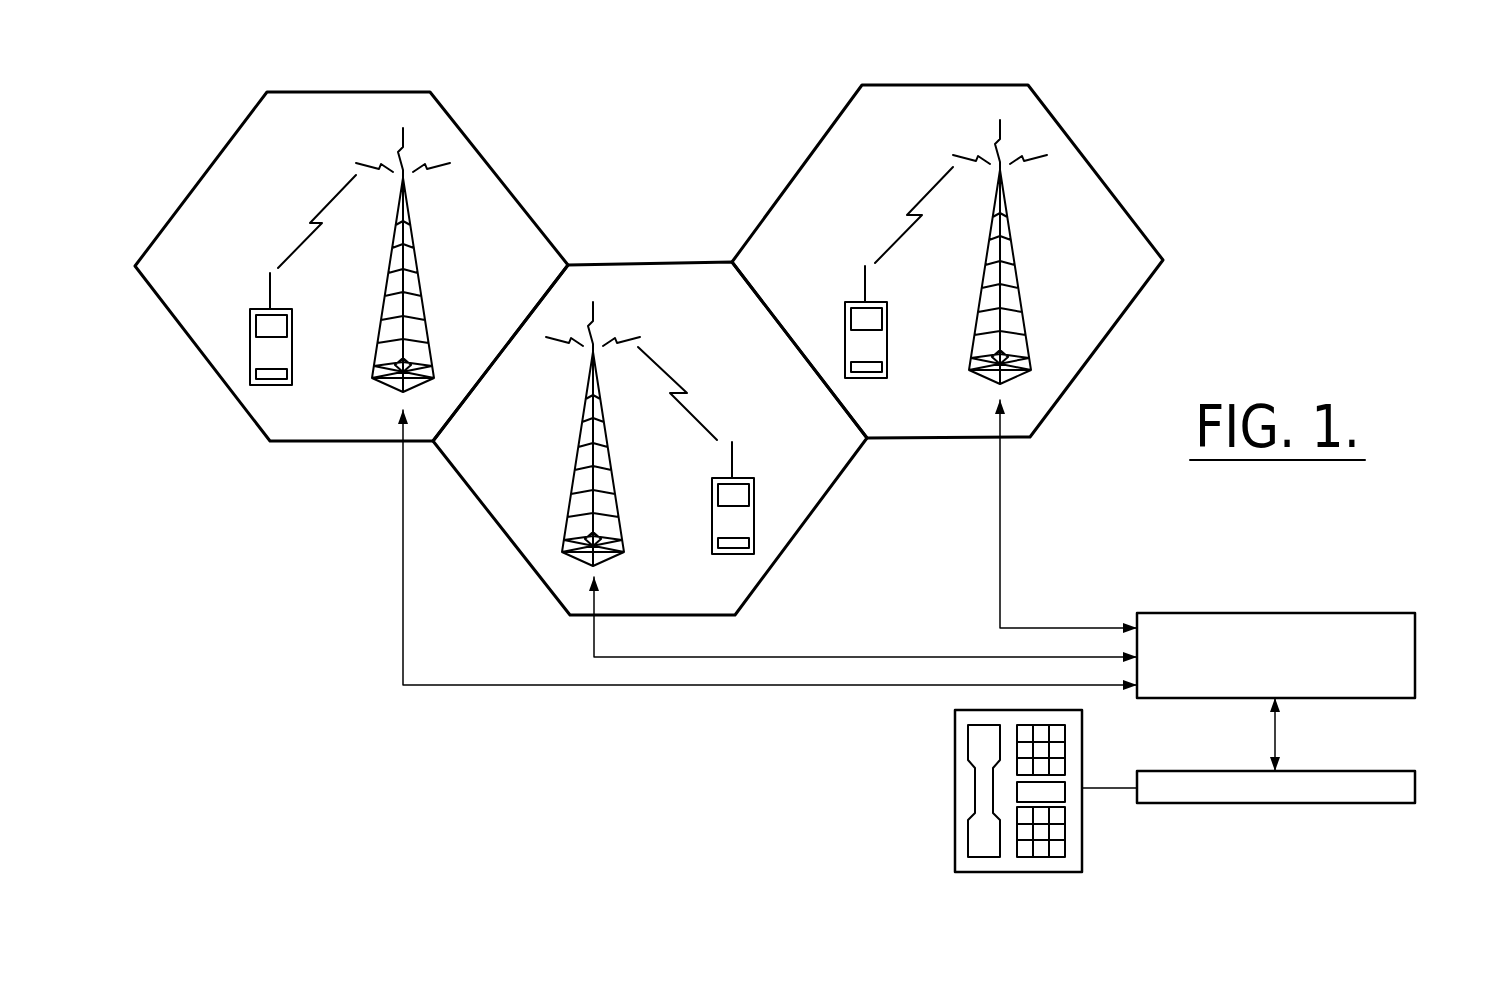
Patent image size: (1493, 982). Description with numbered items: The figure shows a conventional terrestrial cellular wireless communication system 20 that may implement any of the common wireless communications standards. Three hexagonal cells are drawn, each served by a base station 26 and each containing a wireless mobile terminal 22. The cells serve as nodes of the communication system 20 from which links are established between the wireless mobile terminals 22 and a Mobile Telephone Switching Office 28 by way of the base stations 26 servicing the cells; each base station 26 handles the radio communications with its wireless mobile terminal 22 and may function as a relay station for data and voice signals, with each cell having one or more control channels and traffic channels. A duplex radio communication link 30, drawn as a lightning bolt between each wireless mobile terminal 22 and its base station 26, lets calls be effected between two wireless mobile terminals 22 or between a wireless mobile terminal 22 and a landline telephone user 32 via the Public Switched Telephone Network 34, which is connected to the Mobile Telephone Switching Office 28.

The terrestrial wireless communication system 20 is at (1222, 200).
The wireless mobile terminal 22 is at (293, 335).
The base station 26 is at (432, 252).
The Mobile Telephone Switching Office 28 is at (1417, 650).
The duplex radio communication link 30 is at (312, 205).
The landline telephone user 32 is at (1083, 747).
The Public Switched Telephone Network 34 is at (1417, 783).